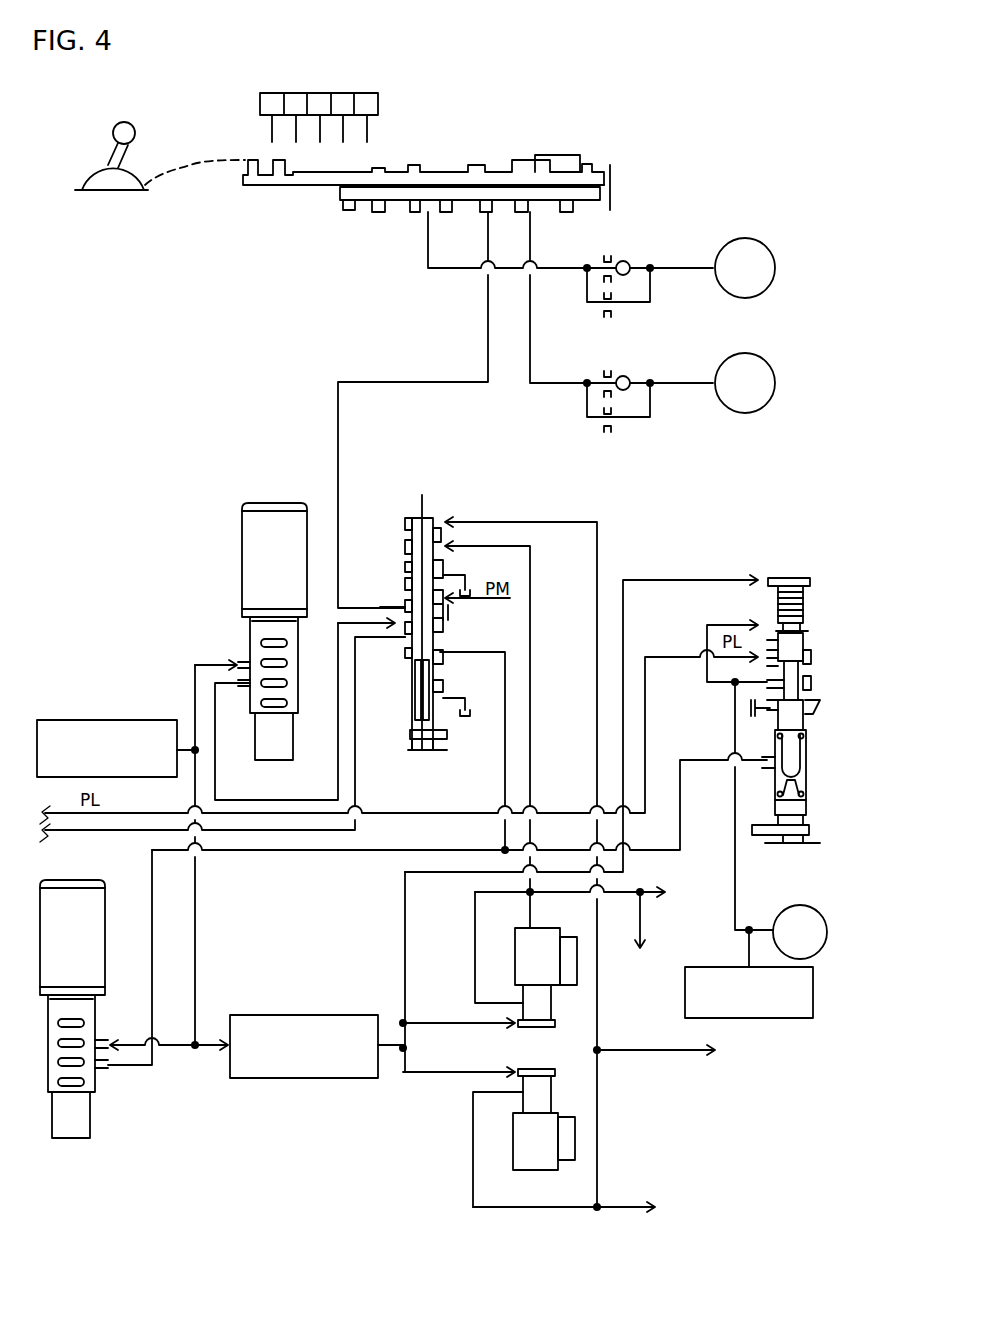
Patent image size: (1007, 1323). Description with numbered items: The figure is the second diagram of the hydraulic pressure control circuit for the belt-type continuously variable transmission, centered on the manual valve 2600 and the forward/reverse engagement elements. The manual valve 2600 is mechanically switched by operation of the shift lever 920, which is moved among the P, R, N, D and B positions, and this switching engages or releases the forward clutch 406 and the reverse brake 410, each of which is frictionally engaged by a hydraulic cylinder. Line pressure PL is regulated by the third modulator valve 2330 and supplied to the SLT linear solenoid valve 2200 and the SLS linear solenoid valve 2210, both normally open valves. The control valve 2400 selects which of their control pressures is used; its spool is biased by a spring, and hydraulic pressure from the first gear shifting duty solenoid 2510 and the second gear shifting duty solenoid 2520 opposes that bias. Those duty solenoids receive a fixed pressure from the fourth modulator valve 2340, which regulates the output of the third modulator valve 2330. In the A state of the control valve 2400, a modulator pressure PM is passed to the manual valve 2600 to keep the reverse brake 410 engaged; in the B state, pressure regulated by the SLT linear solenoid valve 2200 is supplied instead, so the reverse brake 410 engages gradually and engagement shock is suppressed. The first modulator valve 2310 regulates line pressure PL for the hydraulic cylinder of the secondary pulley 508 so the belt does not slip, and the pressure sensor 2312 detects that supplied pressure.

The shift lever 920 is at (112, 152).
The manual valve 2600 is at (622, 125).
The reverse brake (B1 brake) 410 is at (762, 244).
The forward clutch (C1 clutch) 406 is at (762, 360).
The SLT linear solenoid valve 2200 is at (243, 545).
The modulator valve (1) 2310 is at (788, 577).
The modulator valve (3) 2330 is at (103, 719).
The control valve 2400 is at (420, 752).
The secondary pulley 508 is at (812, 907).
The pressure sensor 2312 is at (770, 1018).
The SLS linear solenoid valve 2210 is at (95, 1090).
The modulator valve (4) 2340 is at (292, 1078).
The duty solenoid (2) for gear shifting control 2520 is at (551, 1003).
The duty solenoid (1) for gear shifting control 2510 is at (518, 1069).